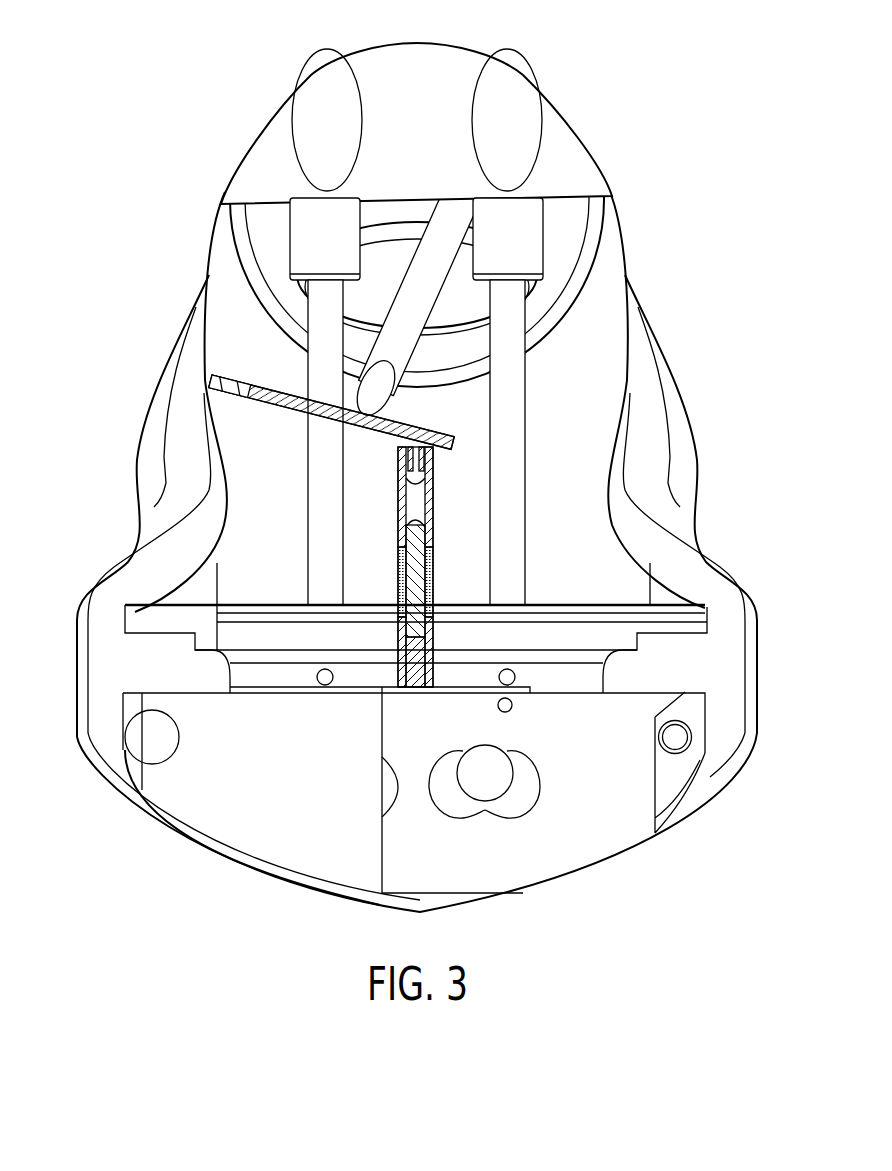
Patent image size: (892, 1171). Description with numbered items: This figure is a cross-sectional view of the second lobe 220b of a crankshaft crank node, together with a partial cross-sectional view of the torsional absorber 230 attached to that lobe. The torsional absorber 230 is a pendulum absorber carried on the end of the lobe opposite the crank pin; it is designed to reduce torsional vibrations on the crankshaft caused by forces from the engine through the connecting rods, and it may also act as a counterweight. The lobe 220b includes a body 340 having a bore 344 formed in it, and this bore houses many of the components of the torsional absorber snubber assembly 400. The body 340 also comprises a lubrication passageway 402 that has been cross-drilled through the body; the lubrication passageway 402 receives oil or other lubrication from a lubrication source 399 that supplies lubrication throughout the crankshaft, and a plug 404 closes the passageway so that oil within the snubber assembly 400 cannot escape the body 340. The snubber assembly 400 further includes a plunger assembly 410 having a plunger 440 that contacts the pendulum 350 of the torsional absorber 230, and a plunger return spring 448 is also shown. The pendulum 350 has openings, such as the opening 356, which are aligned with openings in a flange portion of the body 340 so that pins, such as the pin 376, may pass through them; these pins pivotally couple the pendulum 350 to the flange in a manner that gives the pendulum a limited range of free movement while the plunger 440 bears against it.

The second lobe 220b is at (144, 184).
The torsional absorber snubber assembly 400 is at (236, 297).
The lubrication source 399 is at (440, 266).
The plug 404 is at (252, 388).
The lubrication passageway 402 is at (294, 409).
The bore 344 is at (437, 498).
The plunger assembly 410 is at (393, 537).
The plunger return spring 448 is at (437, 580).
The plunger 440 is at (437, 658).
The body 340 is at (722, 665).
The torsional absorber 230 is at (158, 834).
The pin 376 is at (484, 769).
The opening 356 is at (531, 771).
The pendulum 350 is at (562, 849).